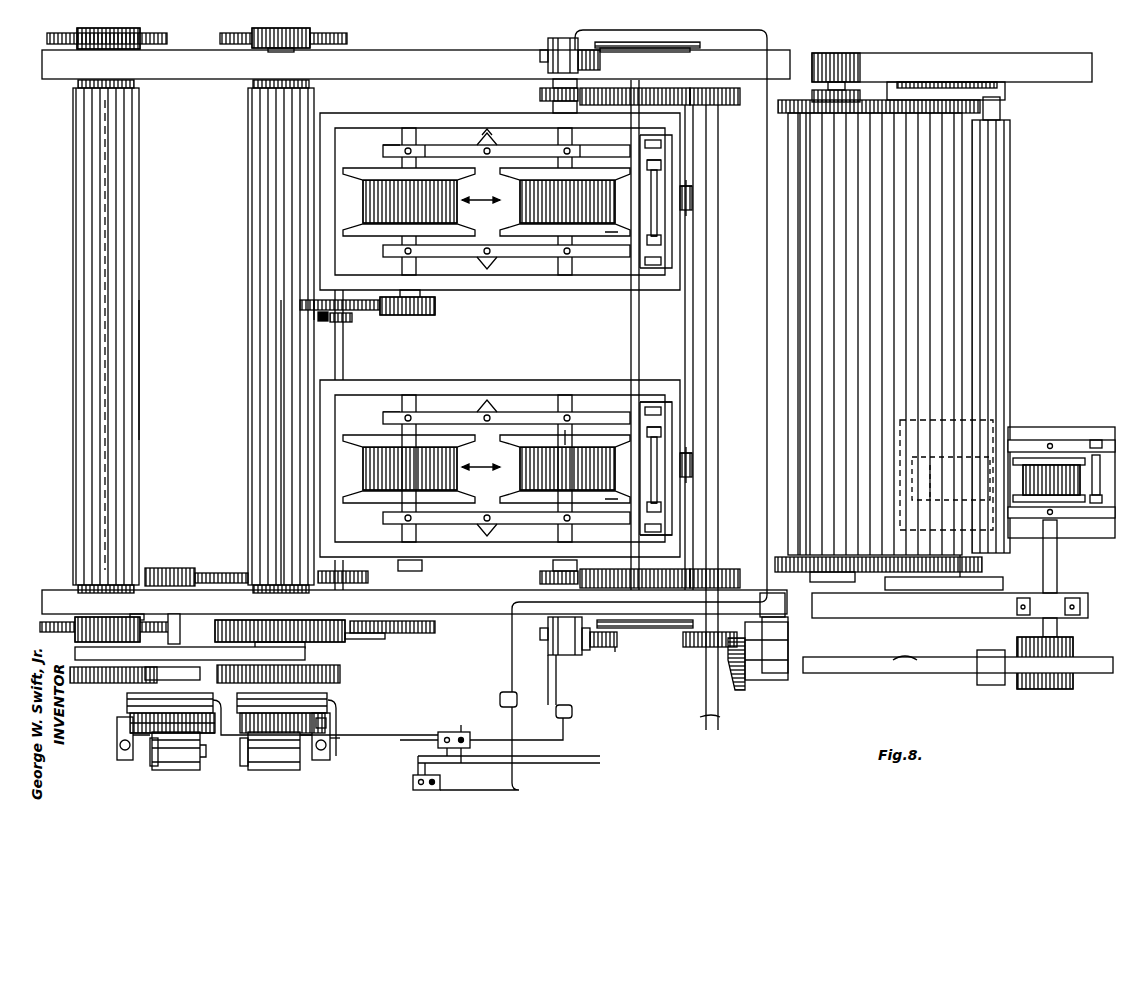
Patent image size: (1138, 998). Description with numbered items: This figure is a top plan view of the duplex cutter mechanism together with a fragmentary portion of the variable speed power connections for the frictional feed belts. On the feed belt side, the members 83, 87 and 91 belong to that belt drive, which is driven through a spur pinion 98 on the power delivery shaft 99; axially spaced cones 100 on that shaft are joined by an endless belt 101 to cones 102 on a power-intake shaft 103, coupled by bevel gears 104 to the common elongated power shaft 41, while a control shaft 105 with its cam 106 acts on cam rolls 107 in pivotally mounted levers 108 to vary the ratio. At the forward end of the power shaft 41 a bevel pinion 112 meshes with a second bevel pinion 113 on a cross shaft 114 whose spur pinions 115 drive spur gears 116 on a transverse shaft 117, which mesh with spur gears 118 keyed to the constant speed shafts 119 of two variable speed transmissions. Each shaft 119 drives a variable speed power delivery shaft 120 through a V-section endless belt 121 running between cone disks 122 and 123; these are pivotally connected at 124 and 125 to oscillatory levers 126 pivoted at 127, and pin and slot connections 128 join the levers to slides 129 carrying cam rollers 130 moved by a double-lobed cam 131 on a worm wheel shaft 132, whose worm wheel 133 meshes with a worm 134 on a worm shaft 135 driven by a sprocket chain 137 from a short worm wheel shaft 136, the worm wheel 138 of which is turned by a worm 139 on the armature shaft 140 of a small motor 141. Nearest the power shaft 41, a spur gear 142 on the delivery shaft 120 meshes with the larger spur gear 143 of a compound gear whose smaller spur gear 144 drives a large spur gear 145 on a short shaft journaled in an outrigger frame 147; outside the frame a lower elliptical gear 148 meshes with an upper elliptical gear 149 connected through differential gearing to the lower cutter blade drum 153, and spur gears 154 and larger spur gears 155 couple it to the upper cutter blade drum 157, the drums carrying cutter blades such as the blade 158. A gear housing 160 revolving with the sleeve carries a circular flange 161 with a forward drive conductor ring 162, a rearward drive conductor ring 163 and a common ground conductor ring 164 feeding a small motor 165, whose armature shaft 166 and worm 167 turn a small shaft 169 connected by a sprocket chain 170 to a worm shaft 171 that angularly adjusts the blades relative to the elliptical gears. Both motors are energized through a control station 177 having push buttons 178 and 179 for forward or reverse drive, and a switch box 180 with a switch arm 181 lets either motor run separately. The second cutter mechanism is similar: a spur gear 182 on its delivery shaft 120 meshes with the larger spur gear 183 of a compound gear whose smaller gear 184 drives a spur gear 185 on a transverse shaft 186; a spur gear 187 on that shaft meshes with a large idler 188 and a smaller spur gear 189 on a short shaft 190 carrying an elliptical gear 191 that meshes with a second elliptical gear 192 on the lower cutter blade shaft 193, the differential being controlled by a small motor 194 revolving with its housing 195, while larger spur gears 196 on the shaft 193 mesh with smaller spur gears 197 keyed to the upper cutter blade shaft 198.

The common elongated power shaft 41 is at (830, 673).
The drum 83 is at (875, 334).
The roller 87 is at (1010, 190).
The feed belt drive member 91 is at (814, 334).
The spur pinion 98 is at (958, 580).
The power delivery shaft 99 is at (930, 510).
The axially spaced cones 100 is at (925, 440).
The endless belt 101 is at (912, 475).
The axially spaced cones 102 is at (1025, 503).
The power-intake shaft 103 is at (1057, 579).
The bevel gears 104 is at (1050, 689).
The control shaft 105 is at (1090, 440).
The cam 106 is at (1092, 456).
The cam rolls 107 is at (1098, 440).
The pivotally mounted levers 108 is at (1020, 440).
The bevel pinion 112 is at (742, 690).
The second bevel pinion 113 is at (695, 647).
The cross shaft 114 is at (718, 306).
The spur pinions 115 is at (742, 105).
The spur gears 116 is at (668, 88).
The transverse shaft 117 is at (640, 325).
The spur gears 118 is at (540, 95).
The power intake shaft 119 is at (573, 140).
The variable speed power delivery shaft 120 is at (412, 145).
The endless belt 121 is at (365, 200).
The cone disks 122 is at (362, 170).
The cone disks 123 is at (612, 238).
The pivotal connection 124 is at (405, 147).
The pivotal connection 125 is at (565, 418).
The oscillatory levers 126 is at (430, 145).
The lever pivot 127 is at (487, 140).
The pin and slot connections 128 is at (661, 144).
The slides 129 is at (672, 402).
The cam rollers 130 is at (661, 166).
The double-lobed cam 131 is at (657, 238).
The worm wheel shaft 132 is at (692, 204).
The worm wheel 133 is at (690, 190).
The worm 134 is at (692, 214).
The worm shaft 135 is at (672, 535).
The short worm wheel shaft 136 is at (607, 650).
The sprocket chain 137 is at (660, 628).
The worm wheel 138 is at (600, 647).
The worm 139 is at (617, 650).
The armature shaft 140 is at (548, 640).
The small motor 141 is at (548, 50).
The spur gear 142 is at (435, 630).
The larger spur gear 143 is at (385, 637).
The smaller spur gear 144 is at (335, 643).
The large spur gear 145 is at (305, 645).
The outrigger frame 147 is at (190, 655).
The lower elliptical gear 148 is at (225, 672).
The upper elliptical gear 149 is at (340, 677).
The lower cutter blade drum 153 is at (250, 322).
The spur gears 154 is at (305, 35).
The larger spur gears 155 is at (345, 40).
The upper cutter blade drum 157 is at (275, 245).
The cutter blade 158 is at (280, 427).
The gear housing 160 is at (274, 751).
The circular flange 161 is at (328, 697).
The forward drive conductor ring 162 is at (130, 703).
The rearward drive conductor ring 163 is at (130, 710).
The common ground conductor ring 164 is at (130, 717).
The small motor 165 is at (275, 770).
The armature shaft 166 is at (152, 765).
The worm 167 is at (120, 760).
The small shaft 169 is at (120, 745).
The sprocket chain 170 is at (330, 738).
The worm shaft 171 is at (330, 720).
The control station 177 is at (458, 732).
The push button 178 is at (444, 735).
The push button 179 is at (466, 736).
The switch box 180 is at (500, 695).
The switch arm 181 is at (556, 713).
The spur gear 182 is at (435, 307).
The larger spur gear 183 is at (300, 304).
The smaller gear 184 is at (318, 316).
The spur gear 185 is at (352, 320).
The transverse shaft 186 is at (343, 364).
The spur gear 187 is at (350, 572).
The large idler 188 is at (230, 573).
The smaller spur gear 189 is at (165, 568).
The short shaft 190 is at (180, 633).
The elliptical gear 191 is at (157, 637).
The second elliptical gear 192 is at (127, 697).
The lower cutter blade shaft 193 is at (110, 454).
The small motor 194 is at (175, 770).
The housing 195 is at (215, 740).
The spur gears 196 is at (50, 40).
The spur gears 197 is at (78, 32).
The upper cutter blade shaft 198 is at (139, 364).